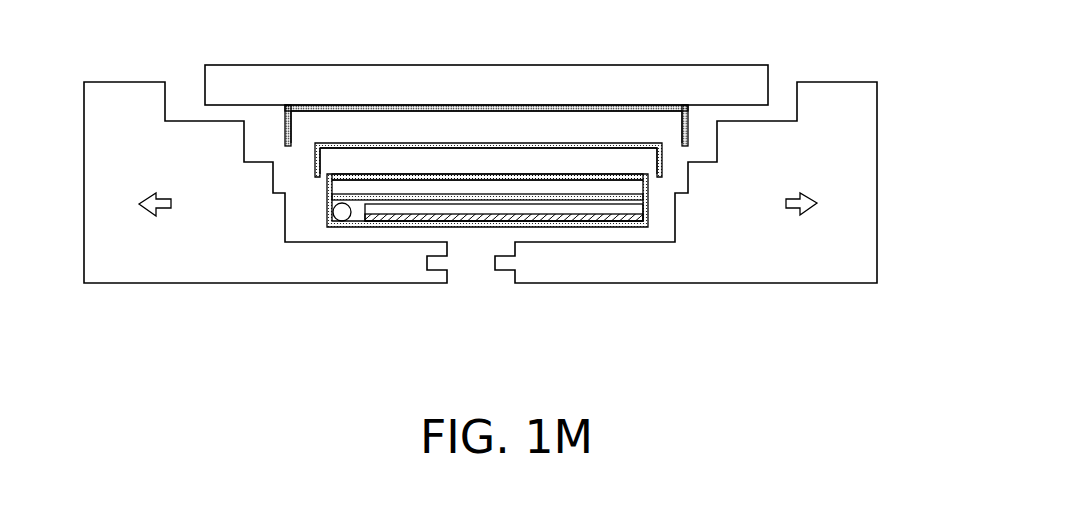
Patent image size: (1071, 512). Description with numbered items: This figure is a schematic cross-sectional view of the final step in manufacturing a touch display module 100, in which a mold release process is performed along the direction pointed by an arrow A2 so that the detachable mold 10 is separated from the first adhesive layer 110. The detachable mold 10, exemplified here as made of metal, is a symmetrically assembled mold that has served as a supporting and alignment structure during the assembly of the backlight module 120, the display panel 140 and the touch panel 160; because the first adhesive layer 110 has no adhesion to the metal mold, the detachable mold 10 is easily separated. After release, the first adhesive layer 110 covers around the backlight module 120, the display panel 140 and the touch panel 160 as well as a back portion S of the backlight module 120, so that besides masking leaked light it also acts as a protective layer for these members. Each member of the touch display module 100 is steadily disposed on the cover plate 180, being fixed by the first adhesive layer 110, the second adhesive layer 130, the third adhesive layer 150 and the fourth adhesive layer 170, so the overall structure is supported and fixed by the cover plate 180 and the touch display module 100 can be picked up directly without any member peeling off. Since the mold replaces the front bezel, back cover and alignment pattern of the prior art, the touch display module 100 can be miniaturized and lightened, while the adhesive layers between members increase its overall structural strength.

The touch display module 100 is at (507, 210).
The detachable mold 10 is at (852, 158).
The first adhesive layer 110 is at (686, 106).
The backlight module 120 is at (536, 260).
The second adhesive layer 130 is at (615, 180).
The display panel 140 is at (563, 158).
The third adhesive layer 150 is at (530, 145).
The touch panel 160 is at (485, 128).
The fourth adhesive layer 170 is at (429, 110).
The cover plate 180 is at (371, 88).
The back portion S is at (531, 227).
The arrow A2 is at (797, 210).